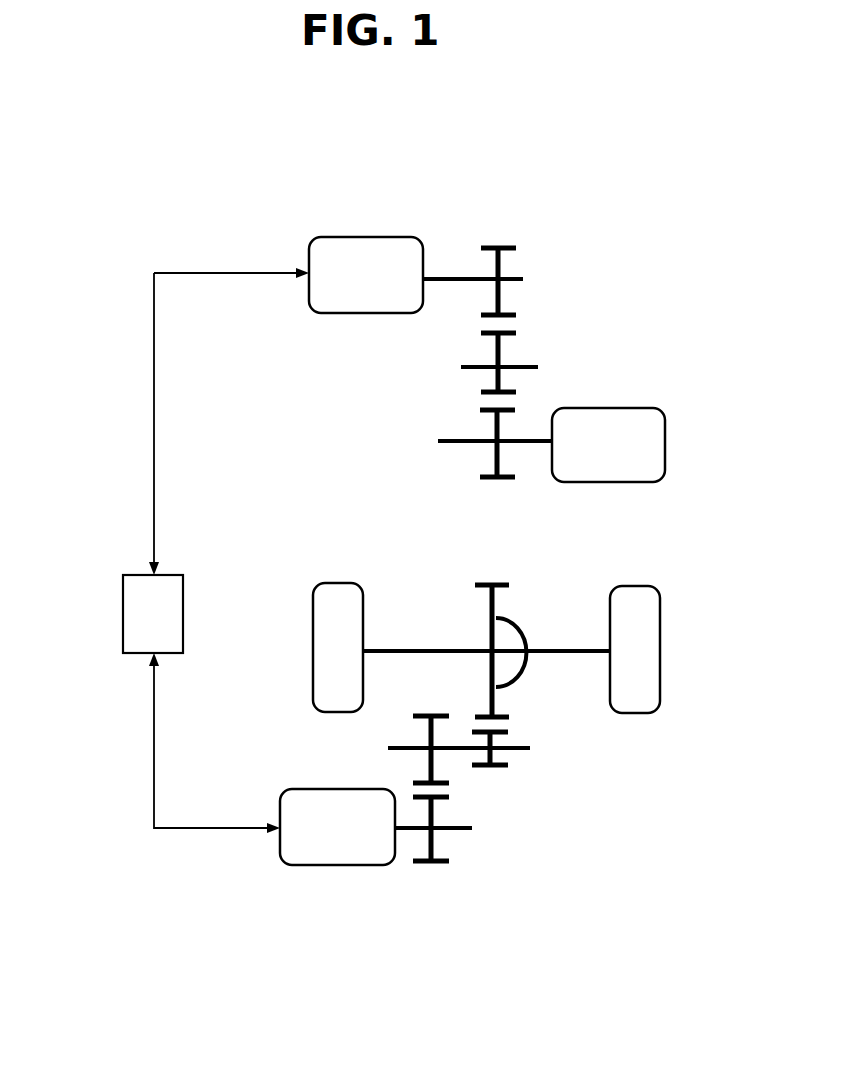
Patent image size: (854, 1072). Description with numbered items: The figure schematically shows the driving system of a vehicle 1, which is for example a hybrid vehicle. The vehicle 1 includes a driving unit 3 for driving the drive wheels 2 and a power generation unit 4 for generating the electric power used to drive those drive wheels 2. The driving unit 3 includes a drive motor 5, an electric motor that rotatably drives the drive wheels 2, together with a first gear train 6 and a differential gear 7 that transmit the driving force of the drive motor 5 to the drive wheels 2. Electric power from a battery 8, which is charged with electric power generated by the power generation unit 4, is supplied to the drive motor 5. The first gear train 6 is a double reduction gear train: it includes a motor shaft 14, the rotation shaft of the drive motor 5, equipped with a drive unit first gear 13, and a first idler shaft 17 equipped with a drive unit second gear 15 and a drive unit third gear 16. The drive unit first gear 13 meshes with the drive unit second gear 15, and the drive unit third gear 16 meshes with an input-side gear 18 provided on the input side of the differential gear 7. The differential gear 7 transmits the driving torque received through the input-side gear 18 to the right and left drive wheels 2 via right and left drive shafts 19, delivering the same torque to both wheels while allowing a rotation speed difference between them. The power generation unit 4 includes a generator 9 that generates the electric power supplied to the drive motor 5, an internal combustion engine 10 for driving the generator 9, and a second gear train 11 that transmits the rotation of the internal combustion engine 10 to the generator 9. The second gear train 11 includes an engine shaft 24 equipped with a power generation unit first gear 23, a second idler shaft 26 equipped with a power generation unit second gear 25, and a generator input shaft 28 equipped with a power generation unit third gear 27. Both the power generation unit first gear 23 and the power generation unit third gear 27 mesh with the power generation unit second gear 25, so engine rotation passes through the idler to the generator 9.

The vehicle 1 is at (126, 250).
The drive wheels 2 is at (313, 612).
The driving unit 3 is at (450, 819).
The power generation unit 4 is at (508, 362).
The drive motor 5 is at (322, 866).
The first gear train 6 is at (378, 766).
The differential gear 7 is at (510, 622).
The battery 8 is at (123, 612).
The generator 9 is at (376, 237).
The internal combustion engine 10 is at (665, 440).
The second gear train 11 is at (417, 360).
The drive unit first gear 13 is at (443, 862).
The motor shaft 14 is at (408, 827).
The drive unit second gear 15 is at (445, 785).
The drive unit third gear 16 is at (493, 768).
The first idler shaft 17 is at (410, 748).
The input-side gear 18 is at (505, 718).
The drive shafts 19 is at (400, 651).
The power generation unit first gear 23 is at (505, 480).
The engine shaft 24 is at (438, 440).
The power generation unit second gear 25 is at (512, 391).
The second idler shaft 26 is at (461, 367).
The power generation unit third gear 27 is at (512, 314).
The generator input shaft 28 is at (443, 281).